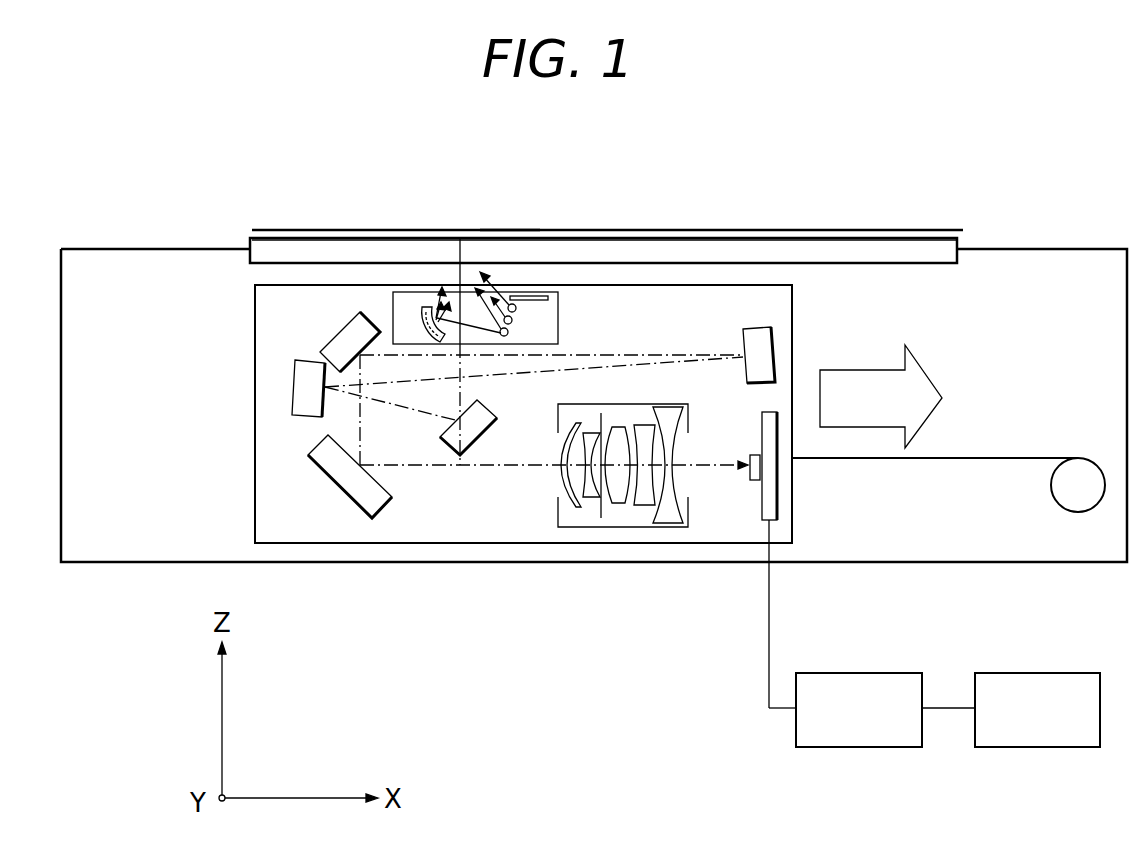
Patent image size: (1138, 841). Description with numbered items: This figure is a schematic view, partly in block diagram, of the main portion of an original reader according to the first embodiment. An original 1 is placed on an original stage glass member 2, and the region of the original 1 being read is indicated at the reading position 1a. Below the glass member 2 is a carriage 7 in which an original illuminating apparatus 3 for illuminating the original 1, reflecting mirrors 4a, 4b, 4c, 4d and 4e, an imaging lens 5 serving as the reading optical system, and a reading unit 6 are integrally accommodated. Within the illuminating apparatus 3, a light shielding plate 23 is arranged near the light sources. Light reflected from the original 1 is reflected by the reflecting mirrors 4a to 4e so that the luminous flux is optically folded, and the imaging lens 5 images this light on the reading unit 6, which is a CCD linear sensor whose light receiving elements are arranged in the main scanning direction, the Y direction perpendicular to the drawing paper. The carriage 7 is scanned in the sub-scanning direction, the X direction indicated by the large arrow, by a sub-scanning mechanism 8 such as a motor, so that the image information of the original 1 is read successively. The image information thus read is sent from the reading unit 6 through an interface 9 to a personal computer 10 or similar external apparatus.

The original 1 is at (408, 229).
The reading position on original 1a is at (510, 229).
The original stage glass member 2 is at (290, 244).
The original illuminating apparatus 3 is at (627, 240).
The reflecting mirror 4a is at (455, 443).
The reflecting mirror 4b is at (300, 406).
The reflecting mirror 4c is at (765, 338).
The reflecting mirror 4d is at (337, 338).
The reflecting mirror 4e is at (337, 482).
The imaging lens 5 is at (588, 517).
The reading unit 6 is at (760, 485).
The carriage 7 is at (757, 285).
The sub-scanning mechanism 8 is at (1075, 502).
The interface 9 is at (862, 737).
The personal computer 10 is at (1060, 737).
The light shielding plate 23 is at (548, 298).